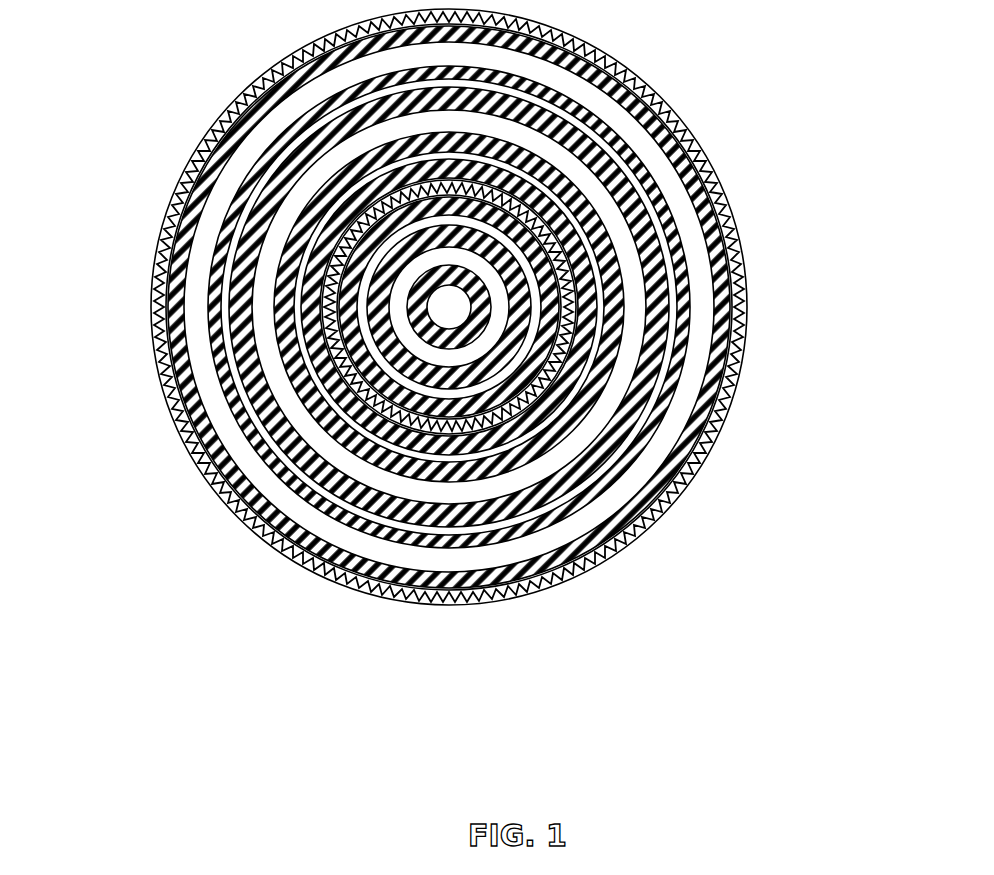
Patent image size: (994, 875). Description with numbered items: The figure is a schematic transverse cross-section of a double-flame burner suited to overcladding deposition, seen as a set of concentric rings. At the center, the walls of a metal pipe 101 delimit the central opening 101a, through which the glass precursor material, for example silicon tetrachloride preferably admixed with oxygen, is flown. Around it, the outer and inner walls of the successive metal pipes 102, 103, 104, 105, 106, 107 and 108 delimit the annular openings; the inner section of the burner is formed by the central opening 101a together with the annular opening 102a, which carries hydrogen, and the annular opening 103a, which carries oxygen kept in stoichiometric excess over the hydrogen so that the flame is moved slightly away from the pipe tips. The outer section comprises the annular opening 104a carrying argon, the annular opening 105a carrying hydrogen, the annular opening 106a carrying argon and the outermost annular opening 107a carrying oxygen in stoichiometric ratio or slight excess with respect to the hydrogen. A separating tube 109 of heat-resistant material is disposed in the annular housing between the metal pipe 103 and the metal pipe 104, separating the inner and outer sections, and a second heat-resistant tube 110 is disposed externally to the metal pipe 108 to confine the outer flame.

The metal pipe 101 is at (438, 312).
The central opening 101a is at (397, 333).
The metal pipe 102 is at (505, 360).
The annular opening 102a is at (363, 343).
The metal pipe 103 is at (553, 340).
The annular opening 103a is at (330, 433).
The metal pipe 104 is at (565, 372).
The annular opening 104a is at (253, 410).
The metal pipe 105 is at (617, 307).
The annular opening 105a is at (263, 357).
The metal pipe 106 is at (670, 257).
The annular opening 106a is at (213, 297).
The metal pipe 107 is at (645, 200).
The annular opening 107a is at (218, 183).
The metal pipe 108 is at (633, 90).
The separating tube 109 is at (707, 443).
The second tube 110 is at (612, 62).